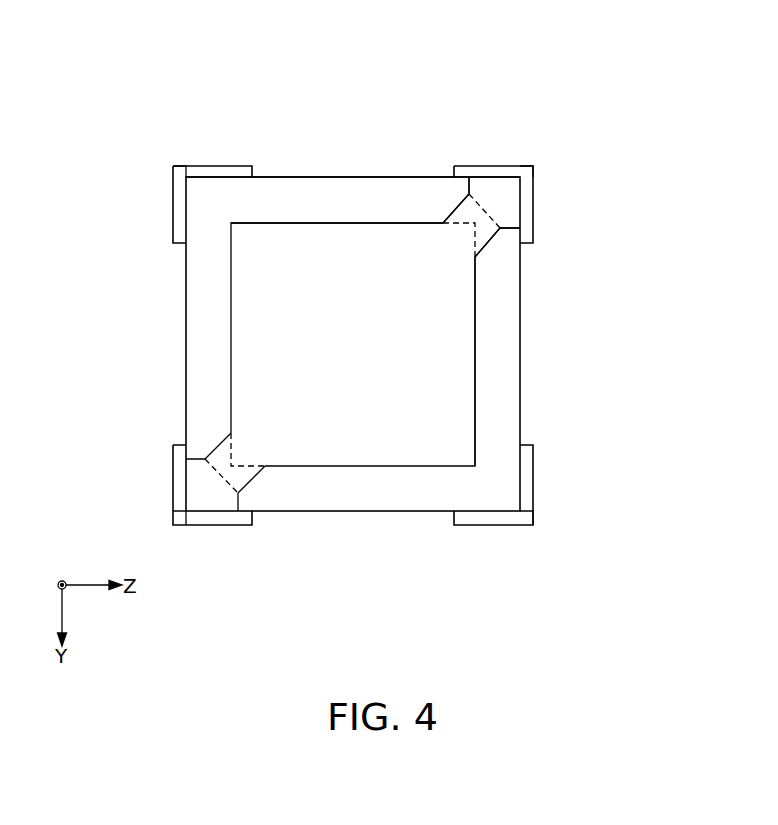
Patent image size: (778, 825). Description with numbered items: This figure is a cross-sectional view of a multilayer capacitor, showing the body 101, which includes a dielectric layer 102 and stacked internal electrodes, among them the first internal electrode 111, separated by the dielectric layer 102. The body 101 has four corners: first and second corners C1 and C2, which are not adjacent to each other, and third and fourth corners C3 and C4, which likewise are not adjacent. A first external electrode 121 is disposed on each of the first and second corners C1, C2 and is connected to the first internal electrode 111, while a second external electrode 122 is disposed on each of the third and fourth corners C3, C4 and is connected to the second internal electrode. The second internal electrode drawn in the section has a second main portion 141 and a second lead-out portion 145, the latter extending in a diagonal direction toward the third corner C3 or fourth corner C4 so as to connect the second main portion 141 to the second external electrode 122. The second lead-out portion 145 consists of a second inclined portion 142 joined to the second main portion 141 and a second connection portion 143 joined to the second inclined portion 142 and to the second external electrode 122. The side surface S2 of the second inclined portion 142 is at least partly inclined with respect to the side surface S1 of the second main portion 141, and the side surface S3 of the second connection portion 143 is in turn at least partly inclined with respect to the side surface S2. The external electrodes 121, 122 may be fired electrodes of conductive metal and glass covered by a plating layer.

The body 101 is at (312, 162).
The dielectric layer 102 is at (277, 192).
The first internal electrode 111 is at (670, 203).
The first external electrode 121 is at (210, 165).
The second external electrode 122 is at (492, 166).
The second main portion 141 is at (443, 359).
The second inclined portion 142 is at (487, 229).
The second connection portion 143 is at (498, 192).
The second lead-out portion 145 is at (617, 178).
The first corner C1 is at (182, 157).
The second corner C2 is at (536, 510).
The third corner C3 is at (171, 510).
The fourth corner C4 is at (525, 156).
The side surface of the second main portion S1 is at (386, 211).
The side surface of the second inclined portion S2 is at (441, 207).
The side surface of the second connection portion S3 is at (455, 187).